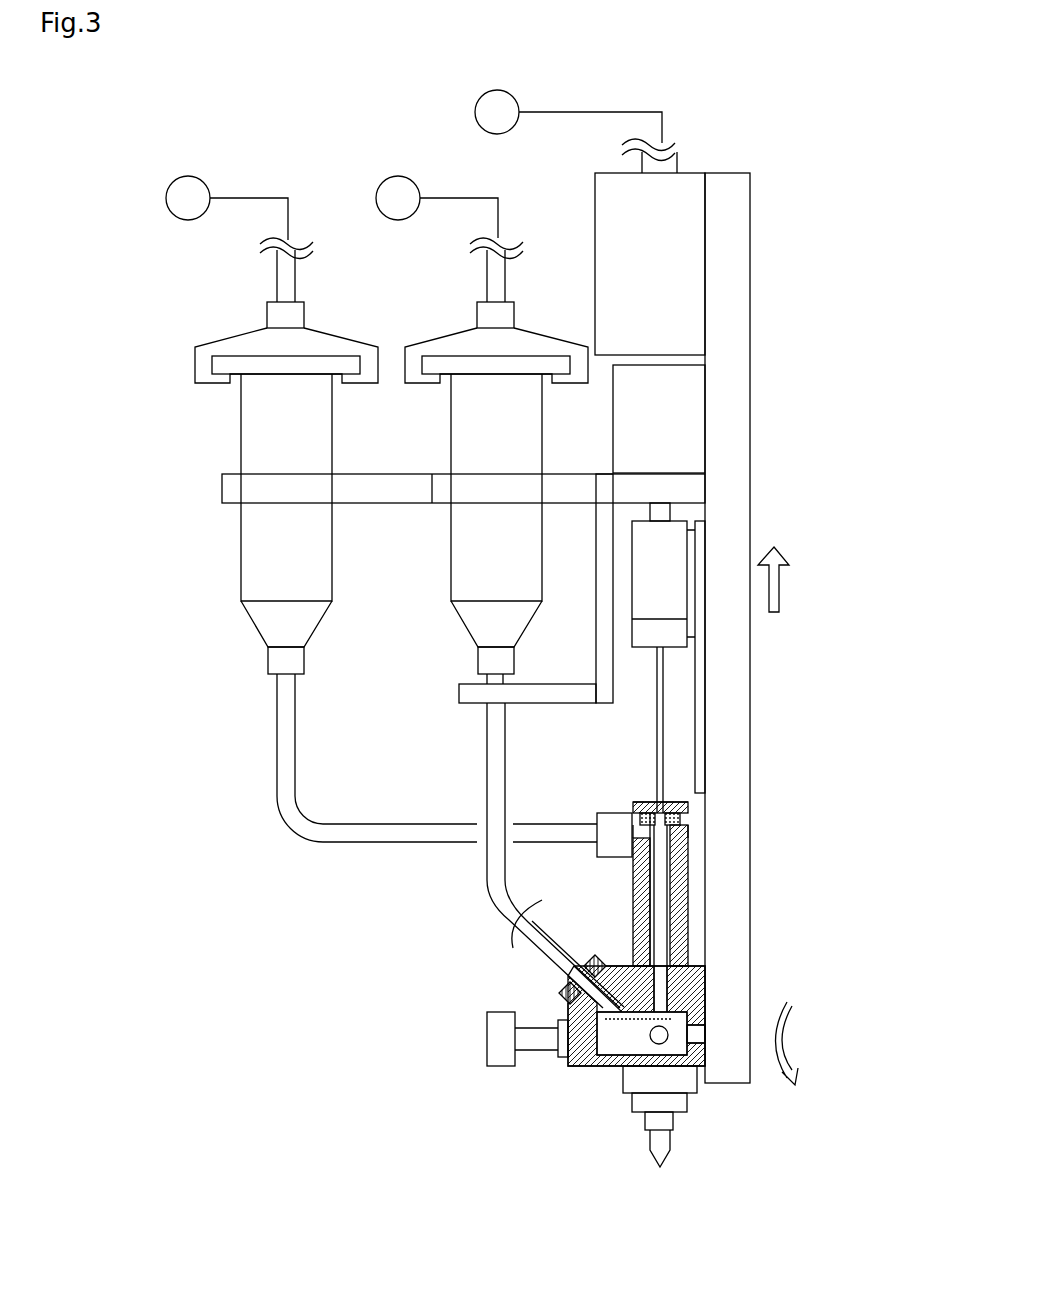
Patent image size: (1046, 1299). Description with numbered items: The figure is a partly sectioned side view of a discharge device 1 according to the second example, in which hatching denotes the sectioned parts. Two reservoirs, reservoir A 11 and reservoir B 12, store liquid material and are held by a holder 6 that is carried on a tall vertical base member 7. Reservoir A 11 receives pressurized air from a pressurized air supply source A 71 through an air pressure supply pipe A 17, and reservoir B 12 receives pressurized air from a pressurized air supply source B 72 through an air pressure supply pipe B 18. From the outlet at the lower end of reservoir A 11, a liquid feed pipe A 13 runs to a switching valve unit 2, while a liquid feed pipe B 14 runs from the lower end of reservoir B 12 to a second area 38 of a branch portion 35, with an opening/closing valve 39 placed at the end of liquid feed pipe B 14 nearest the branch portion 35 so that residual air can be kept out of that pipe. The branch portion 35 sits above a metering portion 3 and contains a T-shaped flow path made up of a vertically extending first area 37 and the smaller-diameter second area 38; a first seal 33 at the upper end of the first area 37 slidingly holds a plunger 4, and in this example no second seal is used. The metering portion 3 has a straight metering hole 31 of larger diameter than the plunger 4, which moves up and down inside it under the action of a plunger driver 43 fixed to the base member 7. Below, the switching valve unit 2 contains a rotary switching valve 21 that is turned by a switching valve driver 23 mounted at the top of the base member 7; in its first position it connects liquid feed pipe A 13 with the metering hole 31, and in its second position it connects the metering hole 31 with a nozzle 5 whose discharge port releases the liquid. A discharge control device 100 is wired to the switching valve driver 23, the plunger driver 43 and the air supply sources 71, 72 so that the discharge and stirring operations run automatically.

The discharge device 1 is at (411, 997).
The switching valve unit 2 is at (479, 1087).
The metering portion 3 is at (687, 912).
The plunger 4 is at (662, 785).
The nozzle 5 is at (660, 1140).
The holder 6 is at (240, 485).
The base member 7 is at (735, 310).
The reservoir A 11 is at (453, 553).
The reservoir B 12 is at (248, 553).
The liquid feed pipe A 13 is at (510, 910).
The liquid feed pipe B 14 is at (423, 830).
The air pressure supply pipe A 17 is at (490, 257).
The air pressure supply pipe B 18 is at (283, 257).
The switching valve 21 is at (613, 1050).
The switching valve driver 23 is at (688, 205).
The metering hole 31 is at (662, 938).
The first seal 33 is at (687, 813).
The branch portion 35 is at (703, 839).
The first area 37 is at (660, 838).
The second area 38 is at (632, 803).
The opening/closing valve 39 is at (617, 823).
The plunger driver 43 is at (690, 437).
The pressurized air supply source A 71 is at (387, 192).
The pressurized air supply source B 72 is at (177, 192).
The discharge control device 100 is at (488, 113).